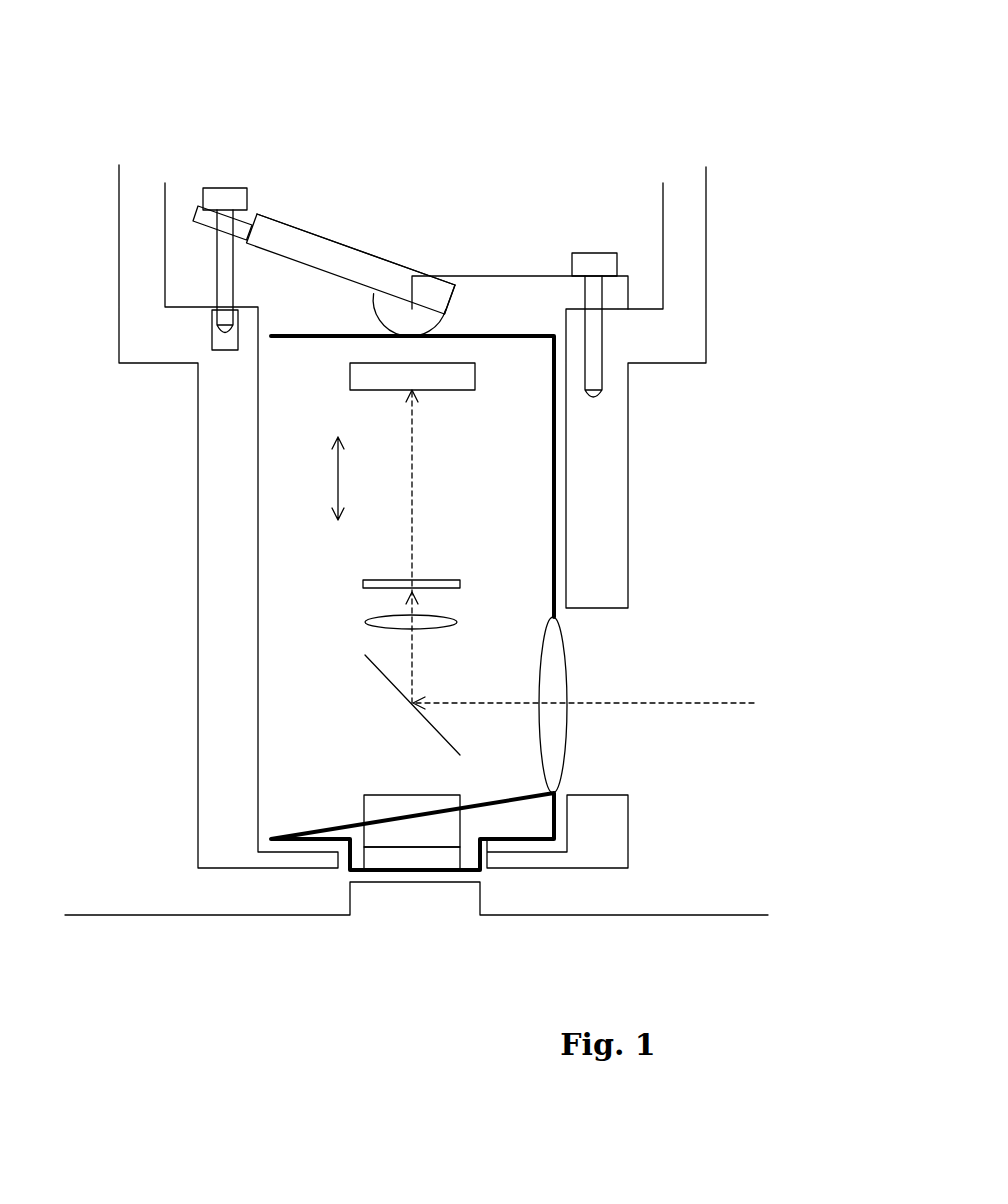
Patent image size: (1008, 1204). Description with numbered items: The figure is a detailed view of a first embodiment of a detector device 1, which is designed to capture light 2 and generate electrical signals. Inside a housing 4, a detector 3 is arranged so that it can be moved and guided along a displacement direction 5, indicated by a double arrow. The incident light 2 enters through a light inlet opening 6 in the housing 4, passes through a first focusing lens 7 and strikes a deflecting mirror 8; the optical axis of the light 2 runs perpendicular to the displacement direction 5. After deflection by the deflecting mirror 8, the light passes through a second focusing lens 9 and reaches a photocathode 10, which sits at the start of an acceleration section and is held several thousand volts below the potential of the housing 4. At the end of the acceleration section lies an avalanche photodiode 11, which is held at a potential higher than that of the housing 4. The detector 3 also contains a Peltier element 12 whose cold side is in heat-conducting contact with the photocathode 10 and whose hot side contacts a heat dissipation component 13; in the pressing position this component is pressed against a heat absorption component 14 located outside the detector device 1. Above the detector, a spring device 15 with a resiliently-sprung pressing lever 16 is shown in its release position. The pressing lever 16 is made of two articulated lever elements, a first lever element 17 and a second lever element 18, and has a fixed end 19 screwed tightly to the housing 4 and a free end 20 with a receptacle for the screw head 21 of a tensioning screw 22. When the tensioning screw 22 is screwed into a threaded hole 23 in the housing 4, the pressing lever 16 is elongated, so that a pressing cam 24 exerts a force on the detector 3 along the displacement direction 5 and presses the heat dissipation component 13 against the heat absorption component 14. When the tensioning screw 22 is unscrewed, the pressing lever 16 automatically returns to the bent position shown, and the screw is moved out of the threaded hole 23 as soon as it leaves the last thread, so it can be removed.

The detector device 1 is at (708, 74).
The light 2 is at (653, 702).
The detector 3 is at (256, 596).
The housing 4 is at (210, 475).
The displacement direction 5 is at (338, 477).
The light inlet opening 6 is at (644, 624).
The first focusing lens 7 is at (548, 678).
The deflecting mirror 8 is at (365, 655).
The second focusing lens 9 is at (368, 622).
The photocathode 10 is at (448, 583).
The avalanche photodiode 11 is at (458, 372).
The Peltier element 12 is at (382, 805).
The heat dissipation component 13 is at (385, 857).
The heat absorption component 14 is at (460, 905).
The spring device 15 is at (440, 173).
The resiliently-sprung pressing lever 16 is at (452, 237).
The first lever element 17 is at (310, 240).
The second lever element 18 is at (518, 284).
The fixed end 19 is at (605, 216).
The free end 20 is at (243, 160).
The screw head 21 is at (215, 195).
The tensioning screw 22 is at (215, 262).
The threaded hole 23 is at (215, 348).
The pressing cam 24 is at (383, 295).